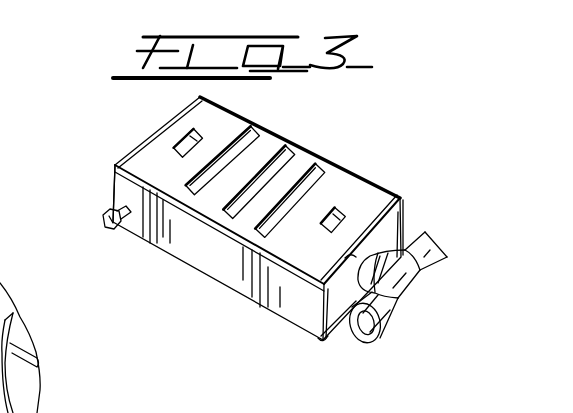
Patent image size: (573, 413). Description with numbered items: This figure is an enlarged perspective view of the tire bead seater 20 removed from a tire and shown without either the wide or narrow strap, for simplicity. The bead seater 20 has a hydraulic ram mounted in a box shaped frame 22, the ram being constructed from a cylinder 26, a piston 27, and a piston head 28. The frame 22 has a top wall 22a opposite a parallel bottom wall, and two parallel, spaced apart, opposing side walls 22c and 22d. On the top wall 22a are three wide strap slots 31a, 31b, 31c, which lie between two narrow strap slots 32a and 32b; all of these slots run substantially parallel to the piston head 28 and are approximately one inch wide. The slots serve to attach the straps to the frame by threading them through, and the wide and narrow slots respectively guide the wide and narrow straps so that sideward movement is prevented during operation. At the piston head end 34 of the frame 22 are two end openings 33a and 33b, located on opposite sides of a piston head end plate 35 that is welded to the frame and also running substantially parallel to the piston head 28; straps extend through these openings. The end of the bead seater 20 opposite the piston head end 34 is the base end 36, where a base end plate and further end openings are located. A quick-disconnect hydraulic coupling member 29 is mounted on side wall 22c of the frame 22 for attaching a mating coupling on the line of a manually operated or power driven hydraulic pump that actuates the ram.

The tire bead seater 20 is at (265, 250).
The frame 22 is at (261, 250).
The top wall 22a is at (251, 186).
The side wall 22c is at (300, 322).
The side wall 22d is at (416, 190).
The cylinder 26 is at (411, 308).
The piston 27 is at (416, 300).
The piston head 28 is at (380, 345).
The quick-disconnect hydraulic coupling member 29 is at (104, 214).
The wide strap slot 31a is at (256, 125).
The wide strap slot 31b is at (290, 148).
The wide strap slot 31c is at (322, 164).
The narrow strap slot 32a is at (196, 130).
The narrow strap slot 32b is at (338, 207).
The end opening 33a is at (347, 258).
The end opening 33b is at (325, 338).
The piston head end 34 is at (344, 351).
The piston head end plate 35 is at (403, 228).
The base end 36 is at (106, 150).